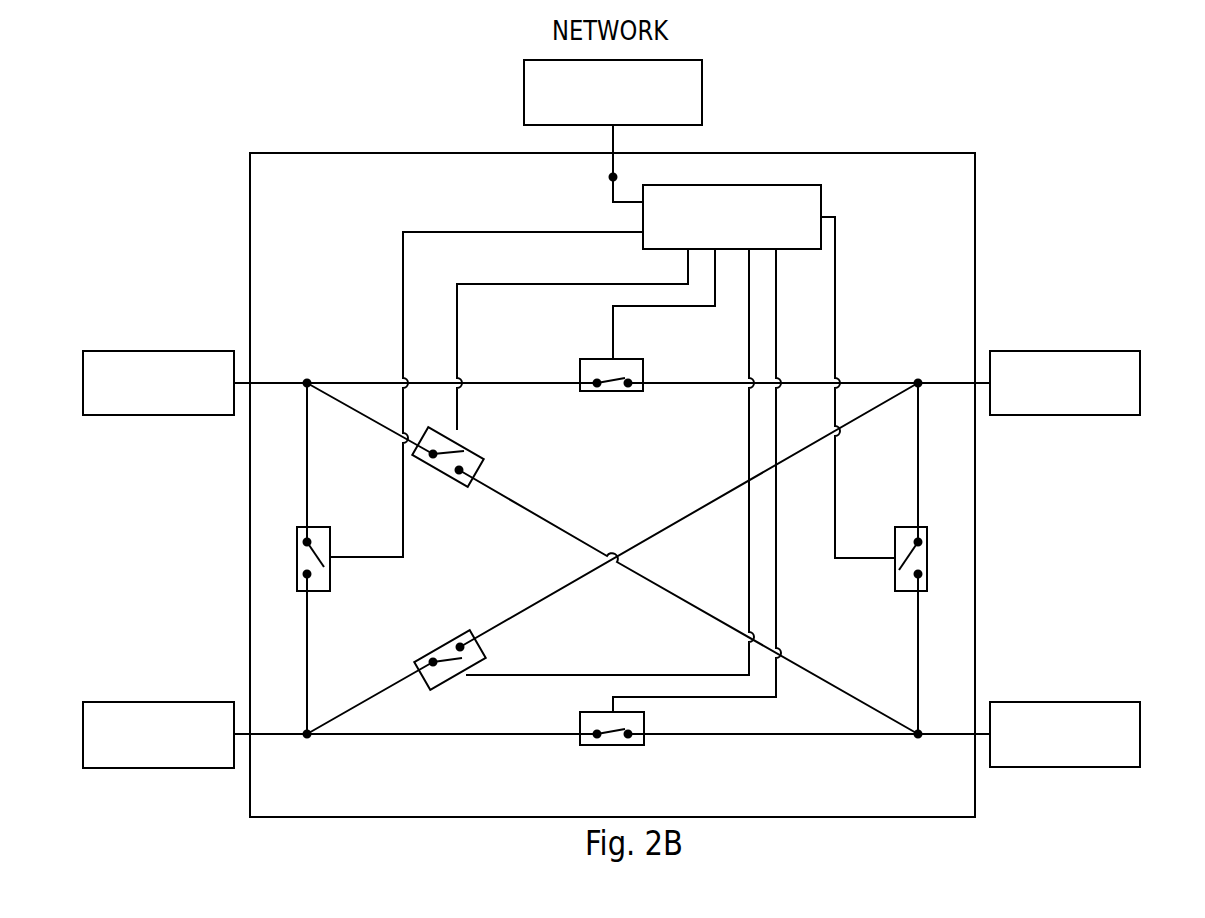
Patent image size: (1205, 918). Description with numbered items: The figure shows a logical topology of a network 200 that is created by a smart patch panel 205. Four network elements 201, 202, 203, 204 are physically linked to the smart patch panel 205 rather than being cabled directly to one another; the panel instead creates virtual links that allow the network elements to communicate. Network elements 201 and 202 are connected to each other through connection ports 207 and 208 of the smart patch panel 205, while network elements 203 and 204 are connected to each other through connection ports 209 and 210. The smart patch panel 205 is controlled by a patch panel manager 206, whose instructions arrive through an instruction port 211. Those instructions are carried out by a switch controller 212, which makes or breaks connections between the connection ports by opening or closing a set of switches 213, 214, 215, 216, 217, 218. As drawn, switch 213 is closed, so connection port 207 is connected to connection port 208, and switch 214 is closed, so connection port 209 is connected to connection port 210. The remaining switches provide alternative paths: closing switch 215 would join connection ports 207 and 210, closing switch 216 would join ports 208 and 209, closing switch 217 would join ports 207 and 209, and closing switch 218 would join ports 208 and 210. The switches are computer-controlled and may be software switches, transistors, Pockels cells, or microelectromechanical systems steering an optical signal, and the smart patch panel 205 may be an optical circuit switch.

The network 200 is at (1081, 99).
The network element 201 is at (122, 351).
The network element 202 is at (1105, 351).
The network element 203 is at (122, 702).
The network element 204 is at (1105, 702).
The smart patch panel 205 is at (250, 168).
The patch panel manager 206 is at (524, 80).
The connection port 207 is at (296, 391).
The connection port 208 is at (931, 392).
The connection port 209 is at (297, 727).
The connection port 210 is at (931, 724).
The instruction port 211 is at (596, 174).
The switch controller 212 is at (821, 203).
The switch 213 is at (613, 391).
The switch 214 is at (603, 712).
The switch 215 is at (440, 474).
The switch 216 is at (439, 639).
The switch 217 is at (297, 548).
The switch 218 is at (927, 558).